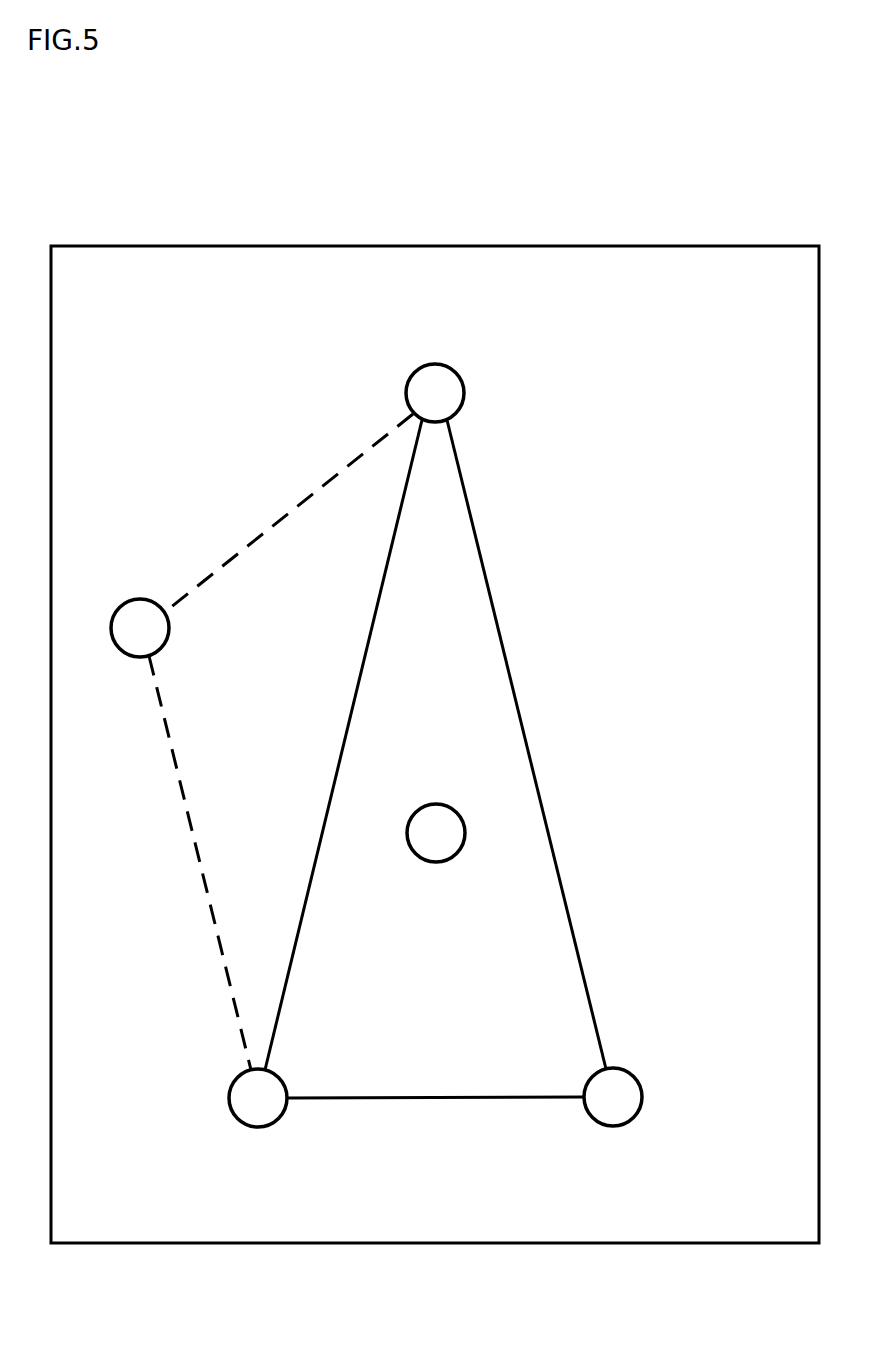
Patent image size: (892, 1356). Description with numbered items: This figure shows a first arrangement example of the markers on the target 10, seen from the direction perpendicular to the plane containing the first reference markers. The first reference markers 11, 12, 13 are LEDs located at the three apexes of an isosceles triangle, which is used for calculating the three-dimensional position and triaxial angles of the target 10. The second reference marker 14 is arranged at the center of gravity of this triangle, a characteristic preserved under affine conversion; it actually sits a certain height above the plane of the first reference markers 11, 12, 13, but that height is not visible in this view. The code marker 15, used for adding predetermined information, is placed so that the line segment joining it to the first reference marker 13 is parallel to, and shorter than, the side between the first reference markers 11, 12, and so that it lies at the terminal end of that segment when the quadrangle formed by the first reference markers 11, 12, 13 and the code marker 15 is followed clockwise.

The target 10 is at (311, 208).
The first reference marker 11 is at (406, 396).
The first reference marker 12 is at (642, 1090).
The first reference marker 13 is at (229, 1100).
The second reference marker 14 is at (435, 804).
The code marker 15 is at (139, 599).